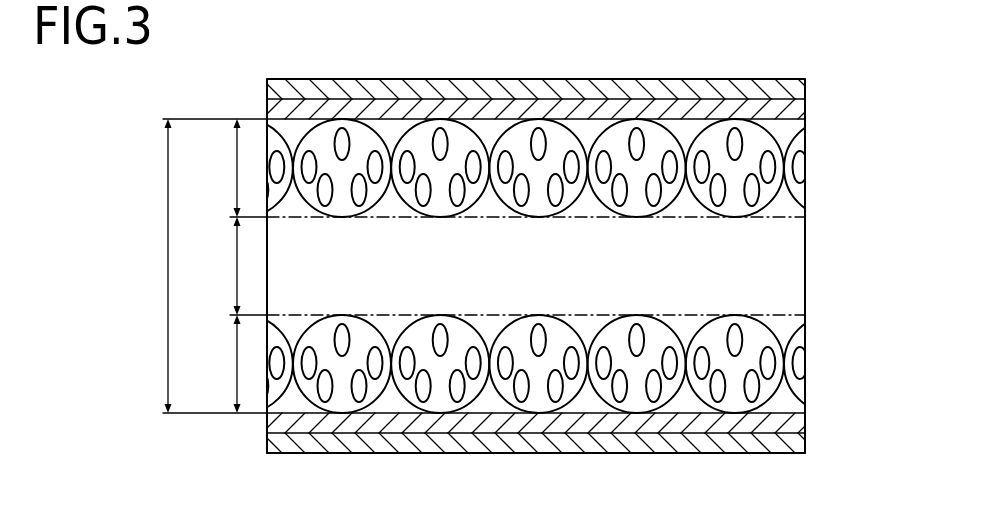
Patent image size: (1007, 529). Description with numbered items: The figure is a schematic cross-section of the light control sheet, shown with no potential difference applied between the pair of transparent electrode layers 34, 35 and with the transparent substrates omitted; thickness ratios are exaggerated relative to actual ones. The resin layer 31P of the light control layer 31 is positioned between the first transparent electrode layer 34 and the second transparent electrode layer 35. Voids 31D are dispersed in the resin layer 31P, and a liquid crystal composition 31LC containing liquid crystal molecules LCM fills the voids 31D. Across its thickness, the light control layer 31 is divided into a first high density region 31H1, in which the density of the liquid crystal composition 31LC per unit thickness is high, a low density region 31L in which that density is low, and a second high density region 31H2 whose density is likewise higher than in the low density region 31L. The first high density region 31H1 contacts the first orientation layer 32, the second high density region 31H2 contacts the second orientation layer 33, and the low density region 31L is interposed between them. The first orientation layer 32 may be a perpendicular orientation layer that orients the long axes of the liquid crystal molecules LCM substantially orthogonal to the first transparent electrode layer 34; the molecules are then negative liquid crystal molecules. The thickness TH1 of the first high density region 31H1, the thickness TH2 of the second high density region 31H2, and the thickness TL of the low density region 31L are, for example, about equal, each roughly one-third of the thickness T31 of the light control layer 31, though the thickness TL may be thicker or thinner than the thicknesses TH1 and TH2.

The light control layer 31 is at (900, 118).
The voids 31D is at (343, 119).
The liquid crystal composition 31LC is at (366, 117).
The first high density region 31H1 is at (808, 337).
The second high density region 31H2 is at (808, 188).
The low density region 31L is at (808, 265).
The resin layer 31P is at (790, 231).
The first orientation layer 32 is at (266, 424).
The second orientation layer 33 is at (266, 112).
The first transparent electrode layer 34 is at (808, 442).
The second transparent electrode layer 35 is at (808, 92).
The liquid crystal molecules LCM is at (333, 200).
The thickness of the light control layer T31 is at (191, 266).
The thickness of the first high density region TH1 is at (212, 364).
The thickness of the second high density region TH2 is at (225, 168).
The thickness of the low density region TL is at (228, 266).